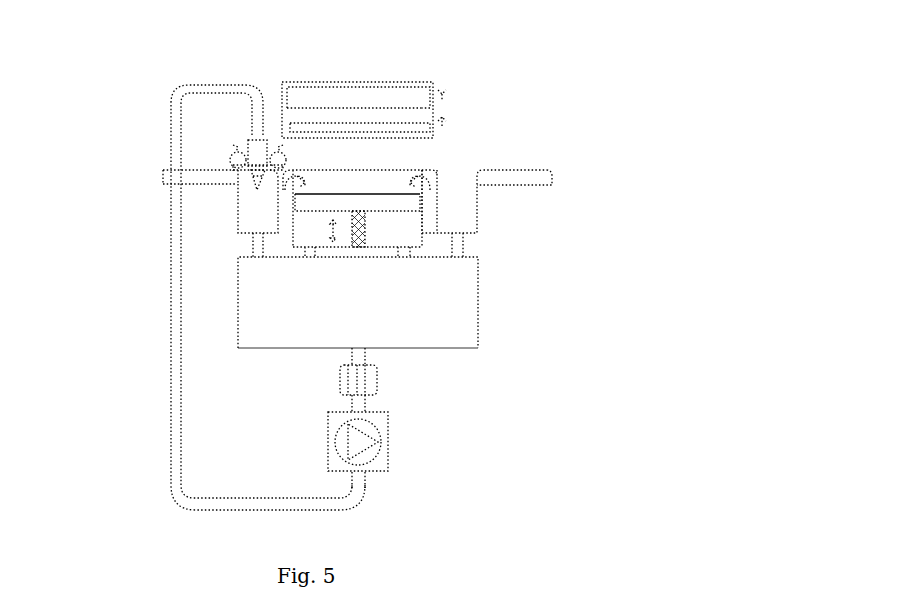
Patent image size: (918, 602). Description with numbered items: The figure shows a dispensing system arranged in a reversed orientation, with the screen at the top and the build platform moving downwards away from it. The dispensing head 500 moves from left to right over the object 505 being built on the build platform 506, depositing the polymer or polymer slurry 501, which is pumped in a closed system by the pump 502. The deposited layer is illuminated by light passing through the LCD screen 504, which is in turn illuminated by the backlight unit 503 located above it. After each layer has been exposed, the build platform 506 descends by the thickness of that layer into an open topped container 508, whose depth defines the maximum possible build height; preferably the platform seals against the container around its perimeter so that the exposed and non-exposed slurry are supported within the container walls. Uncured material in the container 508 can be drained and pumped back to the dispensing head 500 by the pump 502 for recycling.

The dispensing head 500 is at (238, 143).
The polymer or polymer slurry 501 is at (257, 178).
The pump 502 is at (345, 442).
The backlight unit 503 is at (370, 104).
The LCD screen 504 is at (400, 130).
The object 505 is at (332, 177).
The build platform 506 is at (338, 203).
The open topped container 508 is at (422, 219).